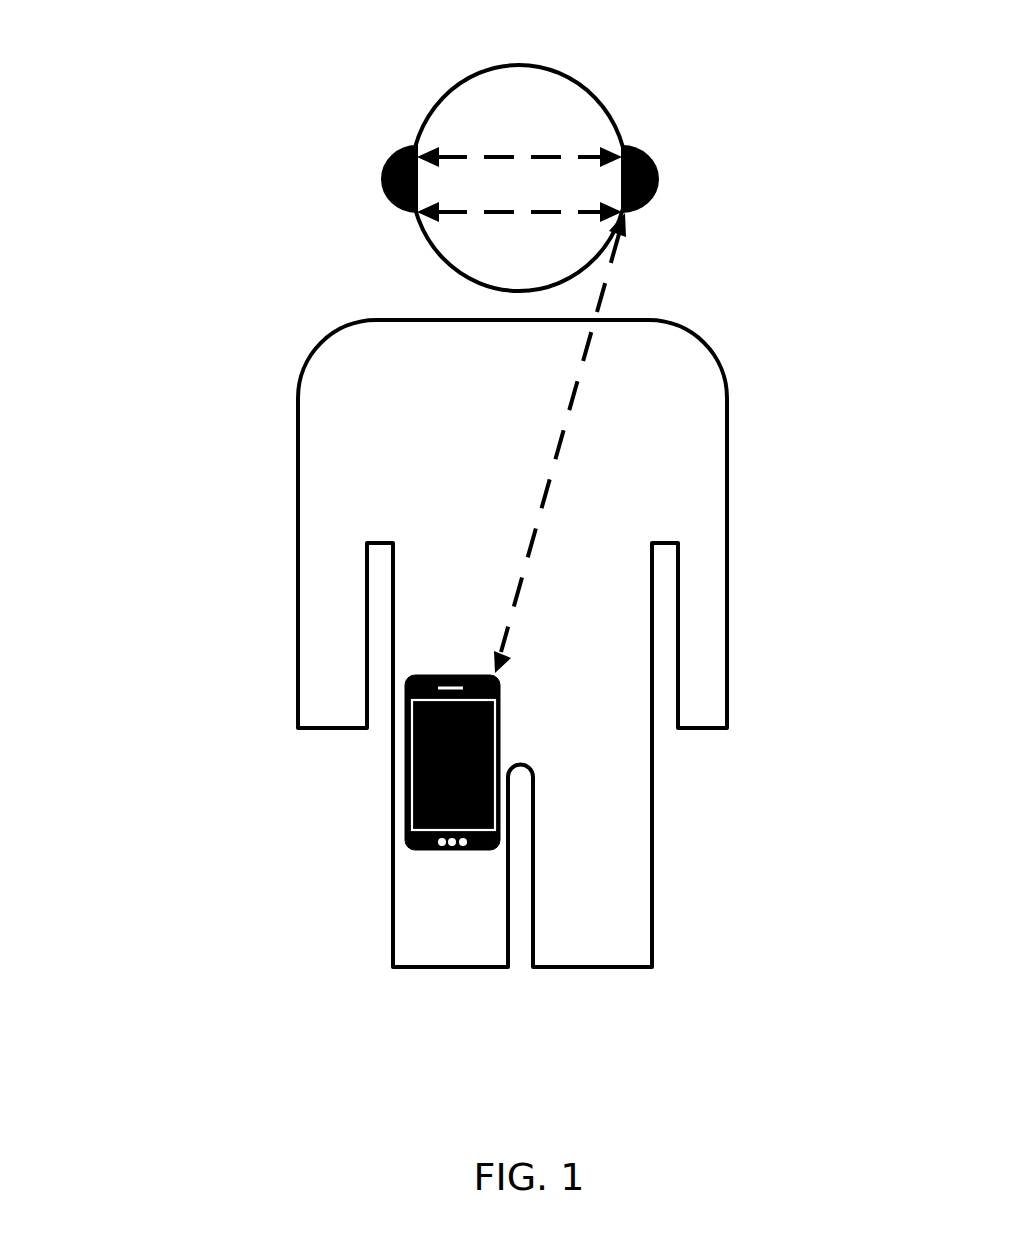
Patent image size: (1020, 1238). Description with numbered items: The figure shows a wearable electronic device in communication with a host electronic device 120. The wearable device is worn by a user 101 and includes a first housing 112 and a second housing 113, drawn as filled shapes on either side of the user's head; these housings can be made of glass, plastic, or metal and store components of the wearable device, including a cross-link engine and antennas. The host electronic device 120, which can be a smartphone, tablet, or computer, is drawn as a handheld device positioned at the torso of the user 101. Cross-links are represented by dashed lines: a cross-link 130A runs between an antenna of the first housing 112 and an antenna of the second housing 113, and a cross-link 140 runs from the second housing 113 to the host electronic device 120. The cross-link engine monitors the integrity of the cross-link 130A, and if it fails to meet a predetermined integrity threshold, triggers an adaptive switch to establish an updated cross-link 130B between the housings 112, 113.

The user 101 is at (303, 385).
The first housing 112 is at (407, 146).
The second housing 113 is at (643, 147).
The host electronic device 120 is at (406, 753).
The cross-link 130A is at (519, 136).
The updated cross-link 130B is at (519, 227).
The cross-link 140 is at (563, 443).